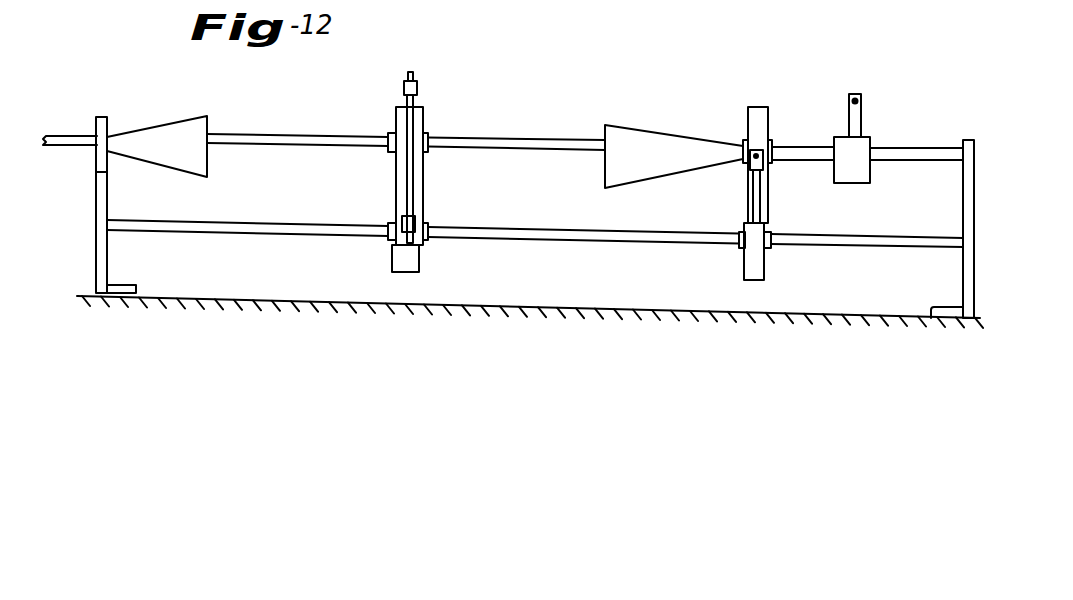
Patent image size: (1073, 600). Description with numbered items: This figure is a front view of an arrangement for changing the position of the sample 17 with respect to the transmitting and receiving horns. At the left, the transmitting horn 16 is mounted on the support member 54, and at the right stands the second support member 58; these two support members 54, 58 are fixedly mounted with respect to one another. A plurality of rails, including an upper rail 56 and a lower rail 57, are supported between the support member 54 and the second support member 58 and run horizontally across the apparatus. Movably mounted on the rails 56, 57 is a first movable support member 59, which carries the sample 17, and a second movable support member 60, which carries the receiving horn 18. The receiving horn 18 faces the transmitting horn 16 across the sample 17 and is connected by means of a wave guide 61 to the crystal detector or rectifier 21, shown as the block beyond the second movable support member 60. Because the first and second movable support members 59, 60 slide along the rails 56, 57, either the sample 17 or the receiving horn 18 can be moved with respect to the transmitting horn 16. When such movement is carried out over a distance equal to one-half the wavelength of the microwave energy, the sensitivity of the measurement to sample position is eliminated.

The support member 54 is at (97, 127).
The horn 16 is at (200, 116).
The rail 56 is at (258, 133).
The first movable support member 59 is at (396, 118).
The sample 17 is at (417, 109).
The rail 57 is at (272, 222).
The receiving horn 18 is at (636, 130).
The second movable support member 60 is at (758, 107).
The wave guide 61 is at (800, 150).
The crystal detector 21 is at (861, 113).
The second support member 58 is at (975, 172).